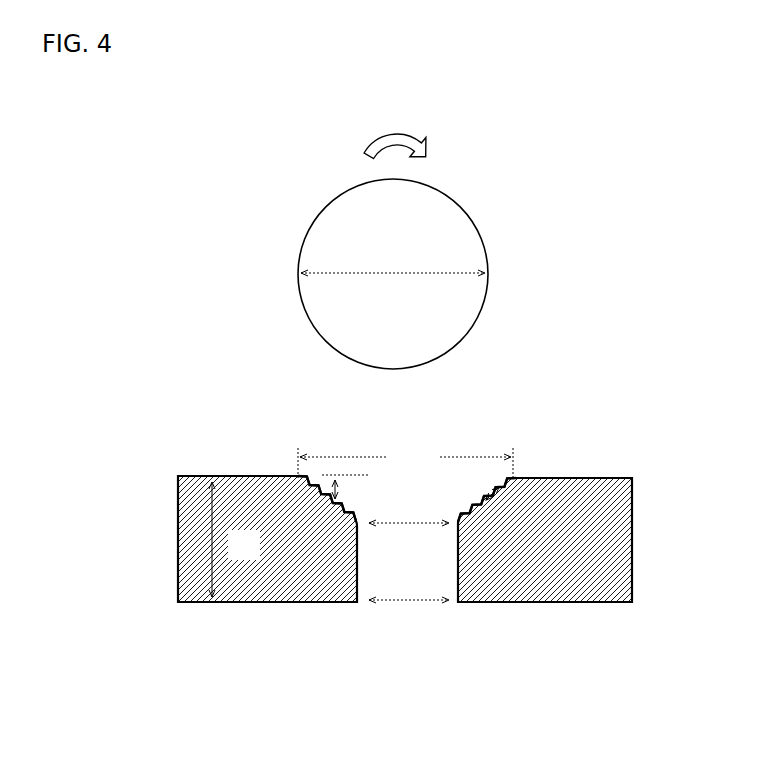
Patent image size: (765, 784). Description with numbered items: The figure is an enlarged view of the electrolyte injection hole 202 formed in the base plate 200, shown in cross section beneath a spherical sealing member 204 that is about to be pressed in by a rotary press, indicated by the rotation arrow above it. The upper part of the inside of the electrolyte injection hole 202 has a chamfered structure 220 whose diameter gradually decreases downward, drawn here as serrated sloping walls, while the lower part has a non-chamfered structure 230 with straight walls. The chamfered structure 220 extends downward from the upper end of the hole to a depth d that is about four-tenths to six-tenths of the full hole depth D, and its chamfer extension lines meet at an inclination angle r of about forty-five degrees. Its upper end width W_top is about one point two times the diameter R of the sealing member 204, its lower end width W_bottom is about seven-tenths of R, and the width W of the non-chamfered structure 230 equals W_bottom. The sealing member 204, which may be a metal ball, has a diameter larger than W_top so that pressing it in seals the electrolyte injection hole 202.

The base plate 200 is at (178, 502).
The electrolyte injection hole 202 is at (455, 474).
The sealing member 204 is at (467, 208).
The chamfered structure 220 is at (296, 502).
The non-chamfered structure 230 is at (458, 568).